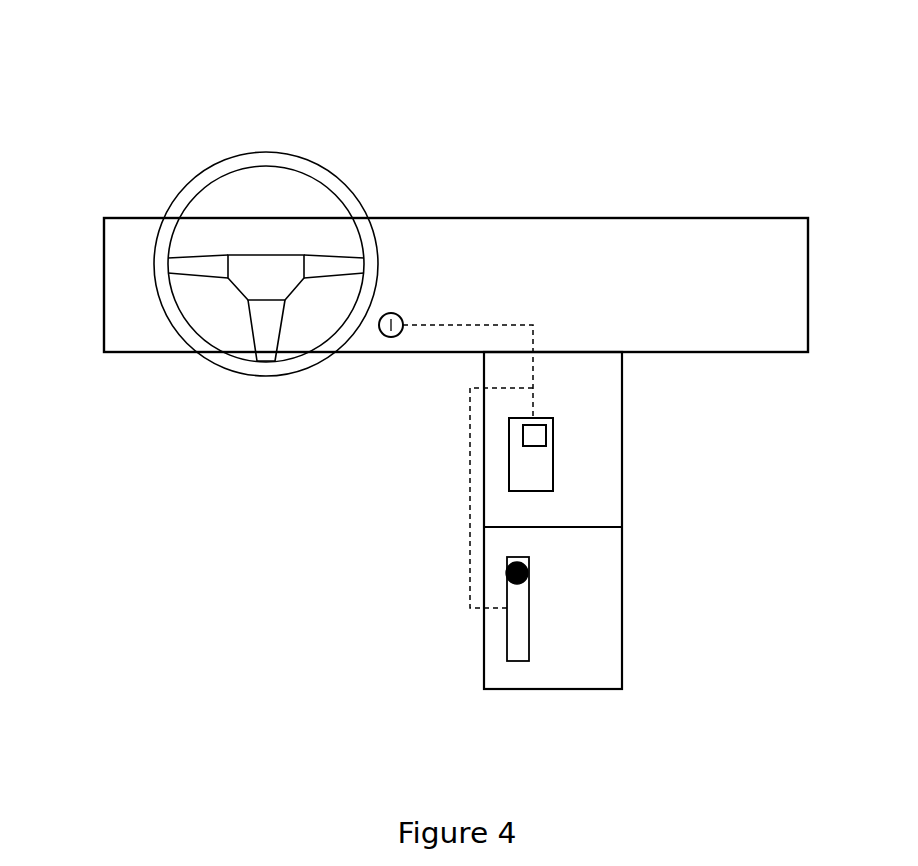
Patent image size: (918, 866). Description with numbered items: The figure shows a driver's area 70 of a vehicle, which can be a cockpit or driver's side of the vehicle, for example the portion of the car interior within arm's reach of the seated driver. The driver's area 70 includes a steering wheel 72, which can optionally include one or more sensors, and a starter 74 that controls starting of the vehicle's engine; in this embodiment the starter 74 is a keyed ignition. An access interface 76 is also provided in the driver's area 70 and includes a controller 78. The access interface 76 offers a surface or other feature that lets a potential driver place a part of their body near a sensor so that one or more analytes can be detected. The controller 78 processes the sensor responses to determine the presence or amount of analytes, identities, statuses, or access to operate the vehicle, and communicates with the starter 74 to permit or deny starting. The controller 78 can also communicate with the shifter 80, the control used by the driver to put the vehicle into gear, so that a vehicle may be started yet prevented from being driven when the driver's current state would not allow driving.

The driver's area 70 is at (703, 108).
The steering wheel 72 is at (187, 187).
The starter 74 is at (398, 315).
The access interface 76 is at (553, 454).
The controller 78 is at (546, 435).
The shifter 80 is at (508, 608).